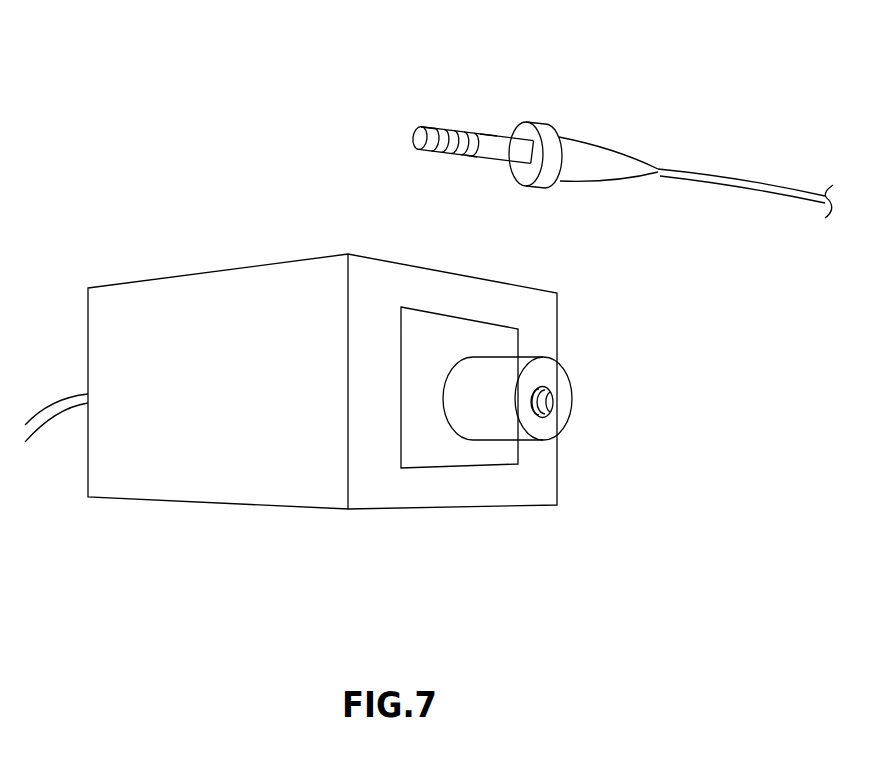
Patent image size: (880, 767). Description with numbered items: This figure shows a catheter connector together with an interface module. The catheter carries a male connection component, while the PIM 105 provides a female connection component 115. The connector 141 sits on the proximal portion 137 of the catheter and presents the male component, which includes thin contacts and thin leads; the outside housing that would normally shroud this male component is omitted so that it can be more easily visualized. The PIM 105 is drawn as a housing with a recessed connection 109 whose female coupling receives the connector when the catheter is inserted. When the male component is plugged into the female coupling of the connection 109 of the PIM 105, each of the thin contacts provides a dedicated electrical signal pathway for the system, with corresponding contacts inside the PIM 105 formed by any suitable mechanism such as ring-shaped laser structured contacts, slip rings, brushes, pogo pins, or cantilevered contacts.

The PIM 105 is at (240, 267).
The connection 109 is at (500, 443).
The female connection component 115 is at (550, 403).
The connector 141 is at (577, 140).
The proximal portion 137 is at (710, 175).